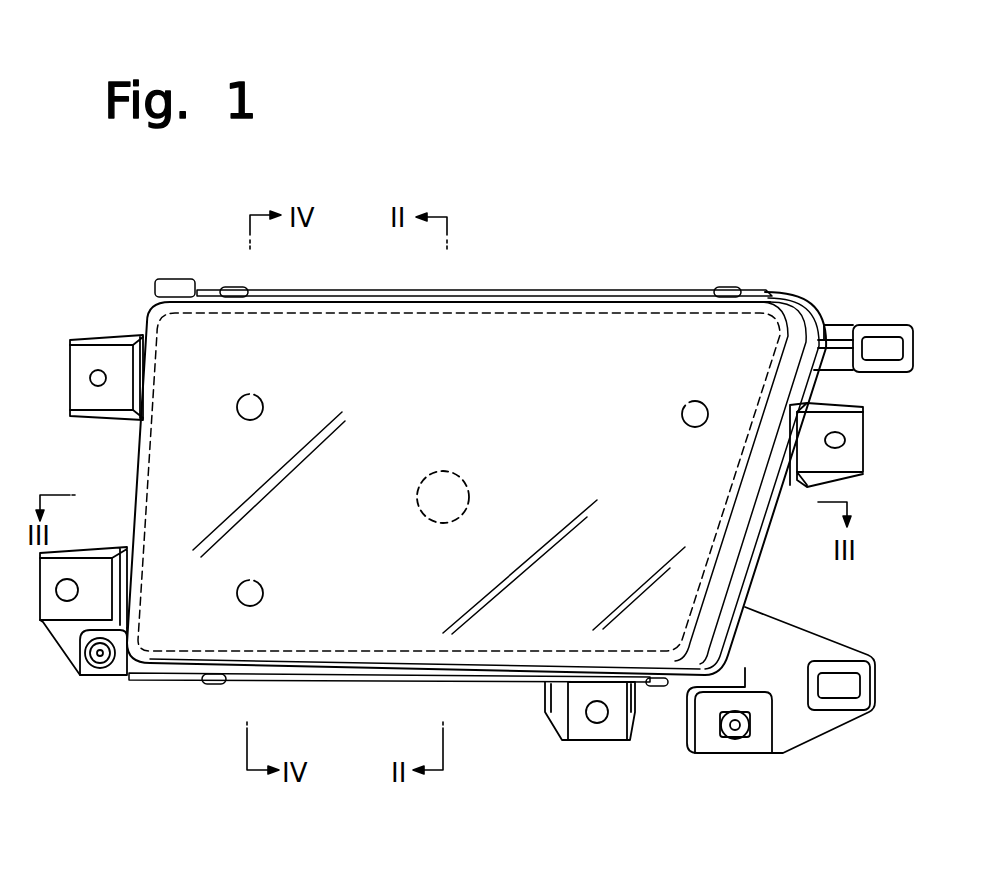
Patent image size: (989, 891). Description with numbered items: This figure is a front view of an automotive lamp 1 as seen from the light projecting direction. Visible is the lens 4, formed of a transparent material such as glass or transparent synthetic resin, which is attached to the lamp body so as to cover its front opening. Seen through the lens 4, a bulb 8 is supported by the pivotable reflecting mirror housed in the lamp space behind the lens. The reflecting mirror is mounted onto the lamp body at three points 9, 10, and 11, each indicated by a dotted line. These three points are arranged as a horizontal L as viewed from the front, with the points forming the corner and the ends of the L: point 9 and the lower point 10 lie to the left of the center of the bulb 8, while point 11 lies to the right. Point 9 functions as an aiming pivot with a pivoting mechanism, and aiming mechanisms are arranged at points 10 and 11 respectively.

The automotive lamp 1 is at (667, 150).
The lens 4 is at (722, 330).
The bulb 8 is at (450, 475).
The mounting point (aiming pivot) 9 is at (263, 406).
The mounting point (aiming mechanism) 10 is at (262, 588).
The mounting point (aiming mechanism) 11 is at (686, 420).